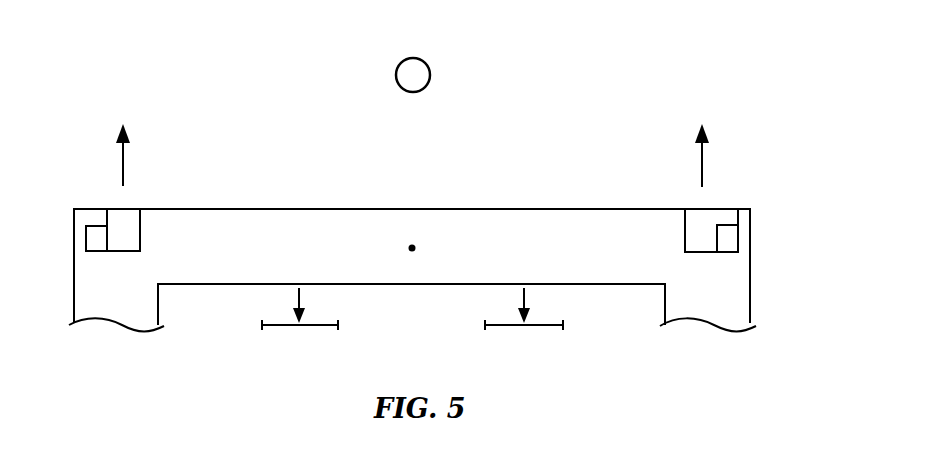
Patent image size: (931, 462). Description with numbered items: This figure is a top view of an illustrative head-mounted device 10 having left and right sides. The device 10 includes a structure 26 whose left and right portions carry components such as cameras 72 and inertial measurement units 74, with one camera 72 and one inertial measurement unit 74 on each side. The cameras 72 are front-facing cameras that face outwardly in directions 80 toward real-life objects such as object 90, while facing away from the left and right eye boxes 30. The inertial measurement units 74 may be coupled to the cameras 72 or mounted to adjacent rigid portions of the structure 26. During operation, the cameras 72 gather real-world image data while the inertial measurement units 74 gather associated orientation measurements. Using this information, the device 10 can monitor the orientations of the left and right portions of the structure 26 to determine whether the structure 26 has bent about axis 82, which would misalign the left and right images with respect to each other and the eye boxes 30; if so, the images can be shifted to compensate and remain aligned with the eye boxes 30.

The head-mounted device 10 is at (785, 130).
The structure 26 is at (745, 297).
The eye boxes 30 is at (485, 324).
The cameras 72 is at (136, 216).
The inertial measurement units 74 is at (90, 236).
The directions 80 is at (120, 161).
The axis 82 is at (412, 244).
The object 90 is at (430, 72).